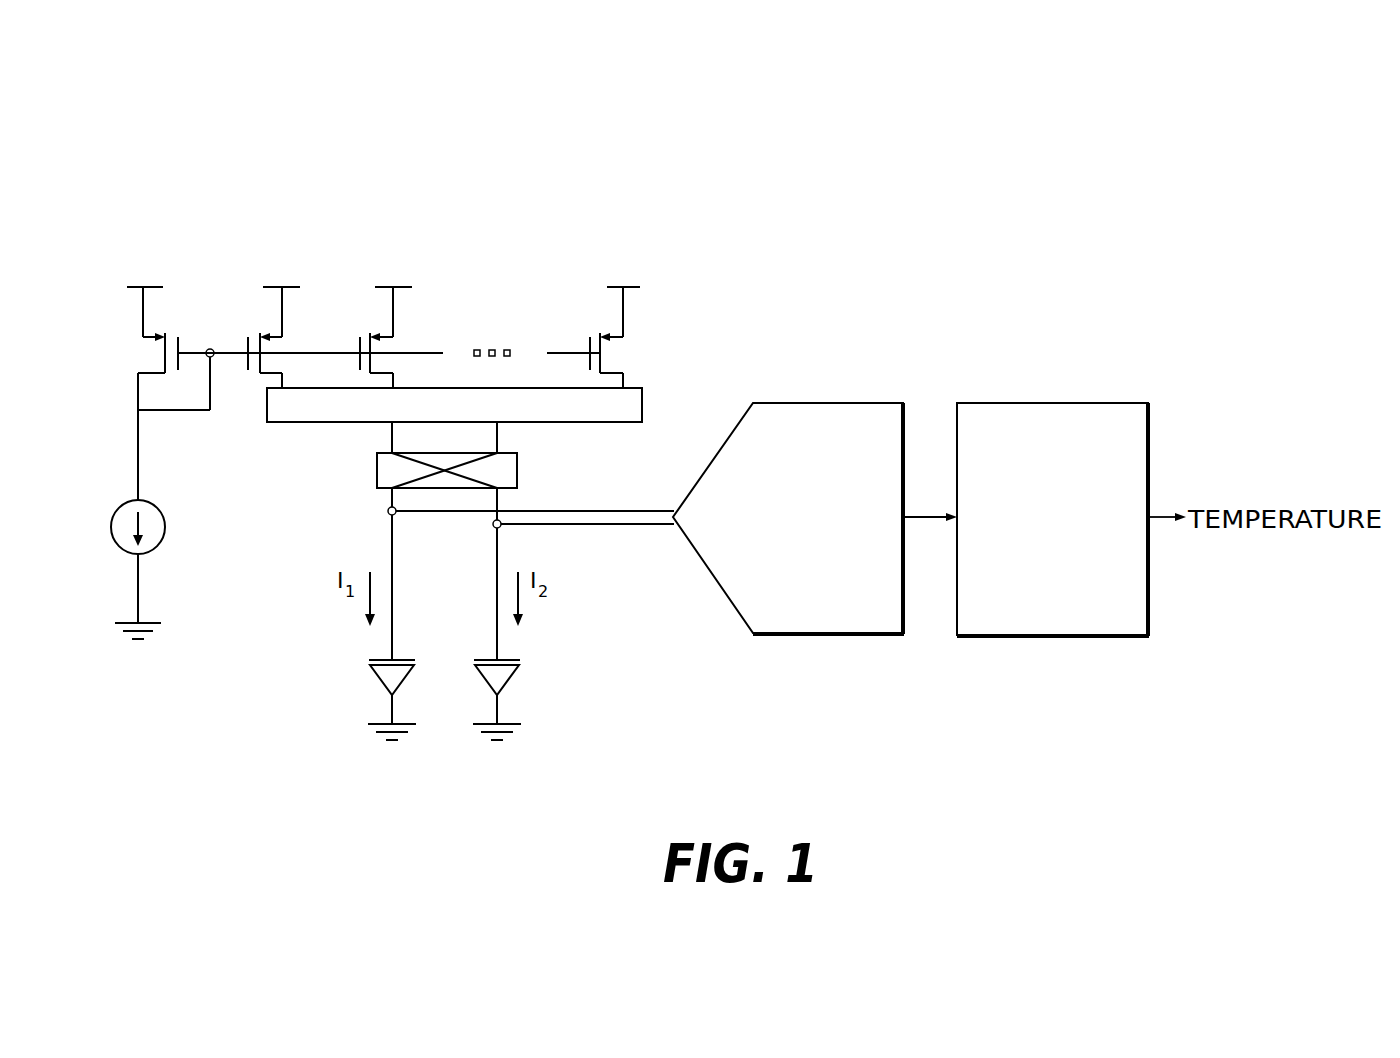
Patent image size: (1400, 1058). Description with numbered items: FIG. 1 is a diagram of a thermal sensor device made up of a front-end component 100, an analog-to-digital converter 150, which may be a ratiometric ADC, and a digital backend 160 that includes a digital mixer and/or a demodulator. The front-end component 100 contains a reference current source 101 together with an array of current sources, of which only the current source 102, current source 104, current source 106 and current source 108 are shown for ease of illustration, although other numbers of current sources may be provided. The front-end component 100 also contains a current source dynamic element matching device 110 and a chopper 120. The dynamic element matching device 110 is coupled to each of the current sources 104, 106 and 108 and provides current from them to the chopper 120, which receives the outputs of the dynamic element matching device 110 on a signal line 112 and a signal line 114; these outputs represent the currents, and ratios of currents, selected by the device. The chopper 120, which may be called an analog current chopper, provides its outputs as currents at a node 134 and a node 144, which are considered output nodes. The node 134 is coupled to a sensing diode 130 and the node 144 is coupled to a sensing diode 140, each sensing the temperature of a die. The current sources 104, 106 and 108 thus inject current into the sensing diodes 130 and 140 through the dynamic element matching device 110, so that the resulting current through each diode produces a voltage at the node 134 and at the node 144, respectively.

The front-end component 100 is at (575, 207).
The reference current source 101 is at (114, 537).
The current source 102 is at (181, 308).
The current source 104 is at (309, 308).
The current source 106 is at (417, 308).
The current source 108 is at (650, 308).
The current source dynamic element matching device 110 is at (612, 422).
The signal line 112 is at (392, 438).
The signal line 114 is at (497, 435).
The chopper 120 is at (517, 470).
The sensing diode 130 is at (363, 683).
The node 134 is at (388, 513).
The sensing diode 140 is at (522, 683).
The node 144 is at (505, 524).
The analog-to-digital converter 150 is at (815, 633).
The digital backend 160 is at (1052, 636).